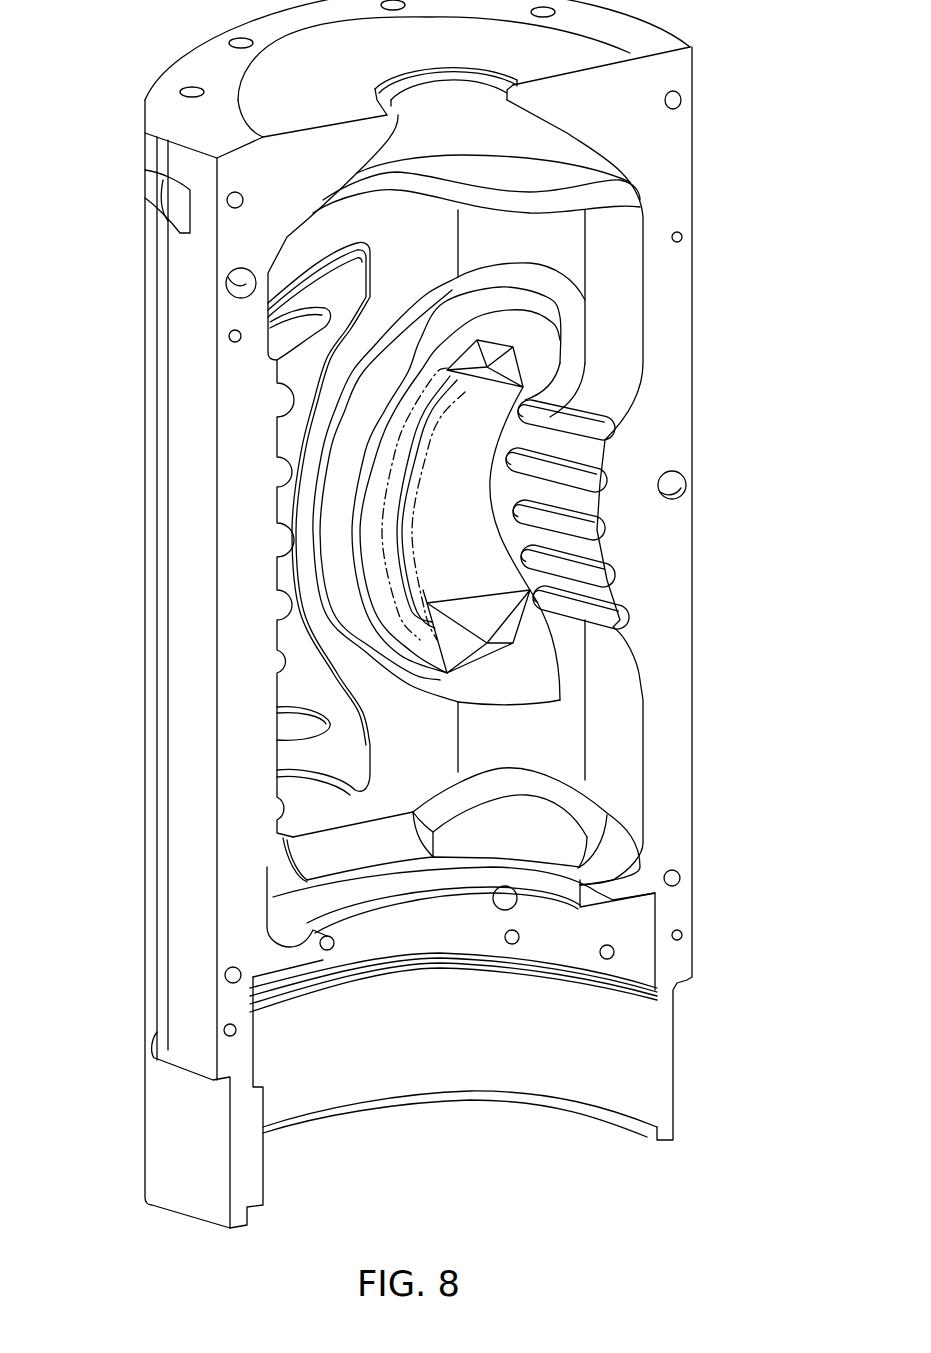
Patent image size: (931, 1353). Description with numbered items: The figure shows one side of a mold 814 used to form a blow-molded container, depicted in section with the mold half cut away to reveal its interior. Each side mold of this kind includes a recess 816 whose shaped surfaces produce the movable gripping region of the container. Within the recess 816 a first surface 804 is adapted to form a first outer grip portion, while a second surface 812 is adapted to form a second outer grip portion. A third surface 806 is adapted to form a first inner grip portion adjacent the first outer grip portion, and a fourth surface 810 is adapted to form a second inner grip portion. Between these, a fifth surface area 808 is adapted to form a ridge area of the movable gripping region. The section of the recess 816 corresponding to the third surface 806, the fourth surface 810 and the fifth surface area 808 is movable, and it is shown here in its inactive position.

The first surface 804 is at (470, 497).
The third surface 806 is at (417, 568).
The fifth surface area 808 is at (420, 597).
The fourth surface 810 is at (393, 543).
The second surface 812 is at (403, 620).
The mold 814 is at (110, 403).
The recess 816 is at (445, 527).